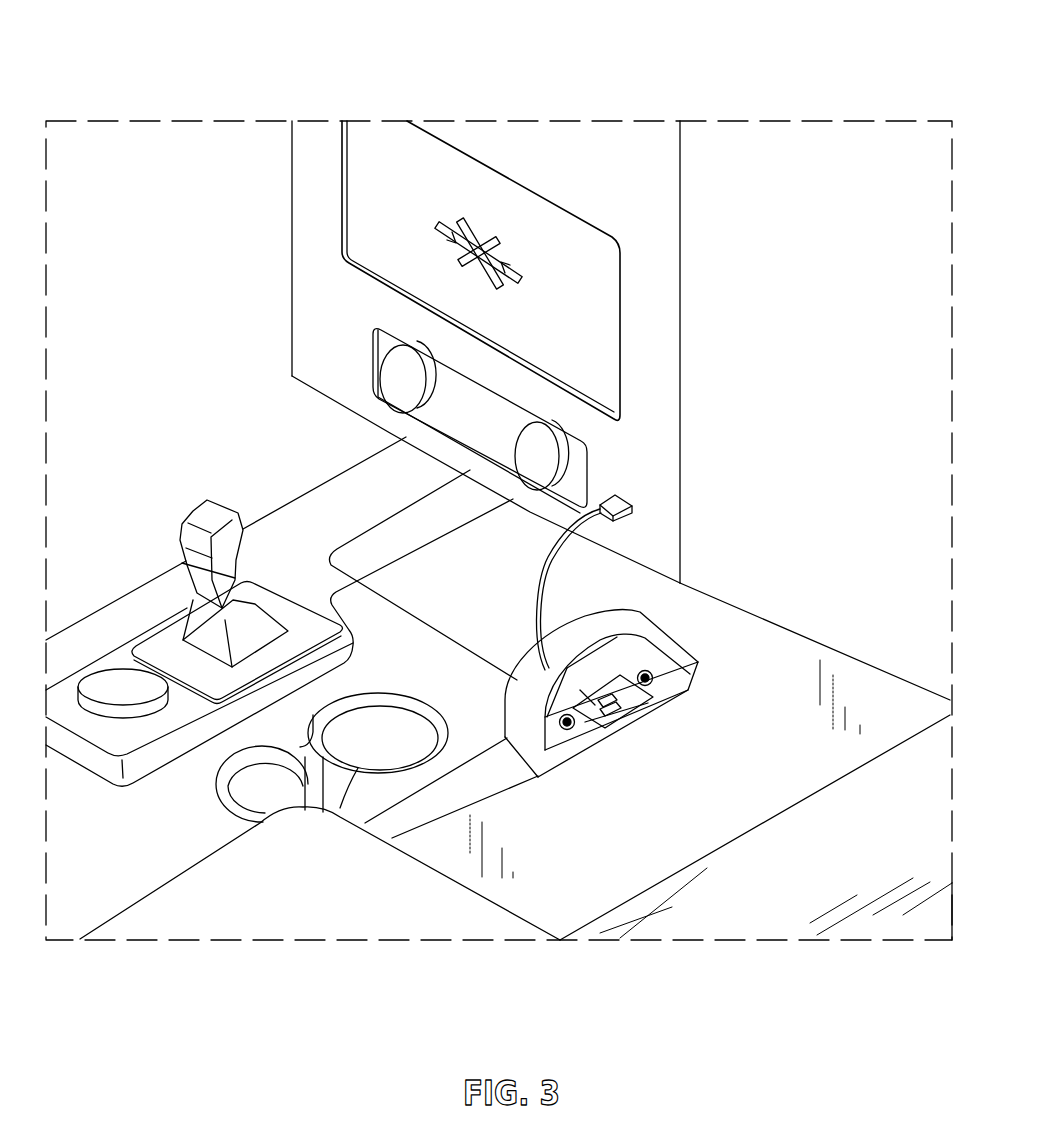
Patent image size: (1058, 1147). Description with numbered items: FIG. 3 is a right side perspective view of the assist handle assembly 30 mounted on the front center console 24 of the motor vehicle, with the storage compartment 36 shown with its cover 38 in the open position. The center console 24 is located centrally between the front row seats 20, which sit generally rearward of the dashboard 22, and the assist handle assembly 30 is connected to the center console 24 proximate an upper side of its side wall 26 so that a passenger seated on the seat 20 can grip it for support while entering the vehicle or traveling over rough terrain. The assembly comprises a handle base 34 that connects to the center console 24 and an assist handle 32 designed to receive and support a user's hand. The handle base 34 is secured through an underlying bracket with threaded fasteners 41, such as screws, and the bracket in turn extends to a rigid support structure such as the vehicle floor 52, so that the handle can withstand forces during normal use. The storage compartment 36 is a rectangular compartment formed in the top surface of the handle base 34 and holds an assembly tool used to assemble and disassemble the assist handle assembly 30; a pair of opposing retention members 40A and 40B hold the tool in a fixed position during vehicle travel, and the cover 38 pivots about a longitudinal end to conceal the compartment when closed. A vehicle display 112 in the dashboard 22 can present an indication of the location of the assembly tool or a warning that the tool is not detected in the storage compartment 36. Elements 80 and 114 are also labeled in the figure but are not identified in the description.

The seat 20 is at (243, 913).
The dashboard 22 is at (587, 168).
The front center console 24 is at (391, 643).
The side wall 26 is at (833, 700).
The assist handle assembly 30 is at (604, 684).
The assist handle 32 is at (542, 673).
The handle base 34 is at (697, 659).
The storage compartment 36 is at (613, 718).
The cover 38 is at (653, 695).
The retention member 40A is at (642, 707).
The retention member 40B is at (607, 683).
The fasteners 41 is at (647, 673).
The vehicle floor 52 is at (847, 903).
The cable 80 is at (565, 545).
The vehicle display 112 is at (433, 168).
The cable connector 114 is at (616, 495).